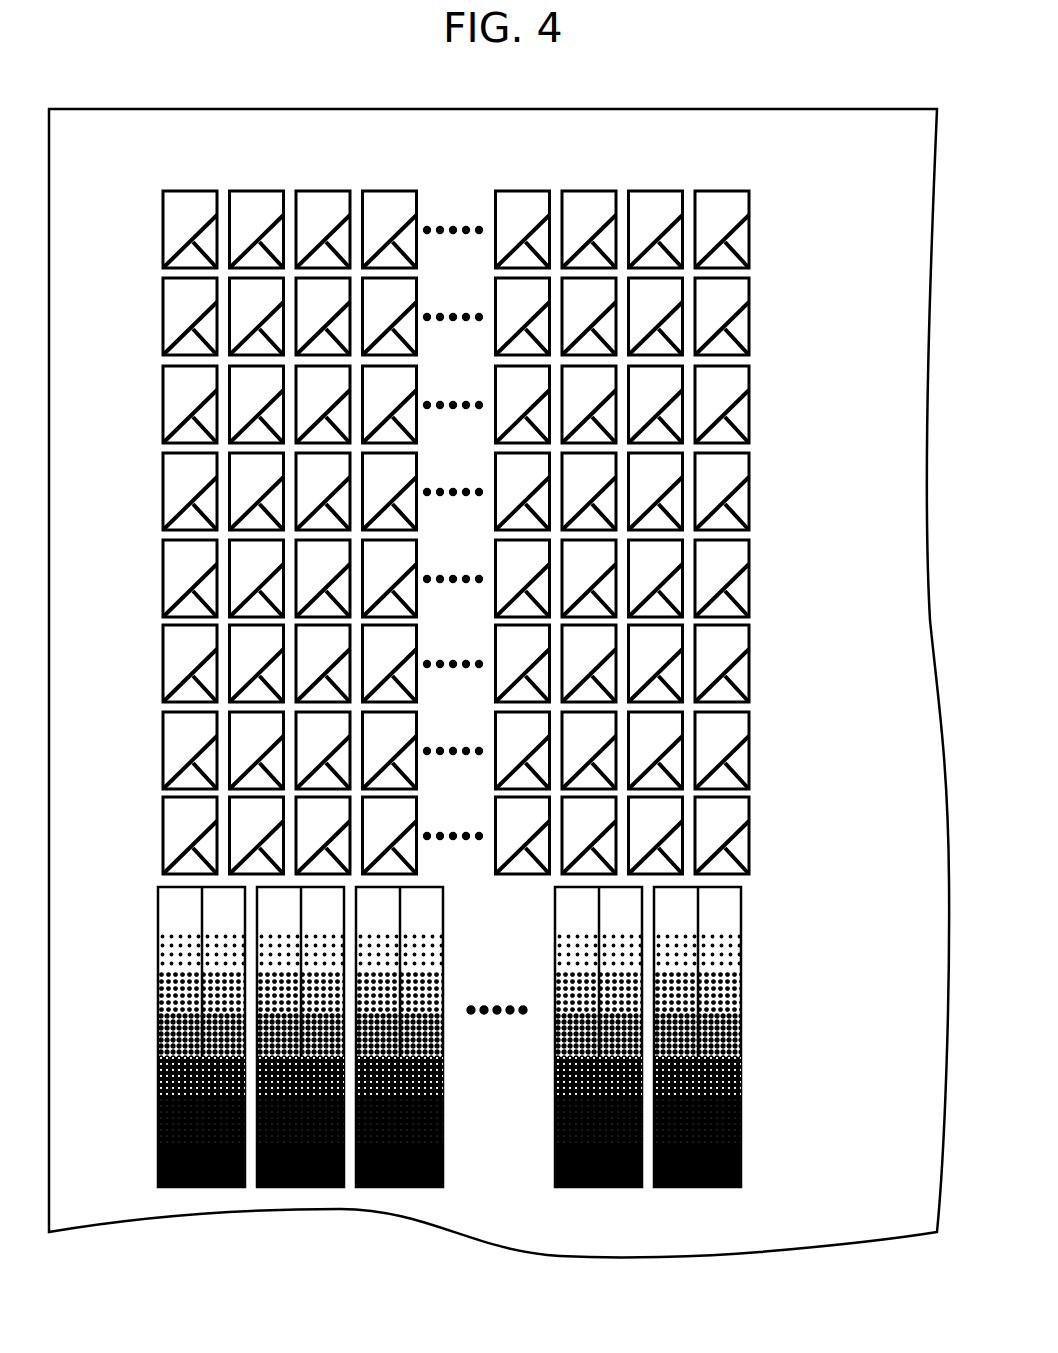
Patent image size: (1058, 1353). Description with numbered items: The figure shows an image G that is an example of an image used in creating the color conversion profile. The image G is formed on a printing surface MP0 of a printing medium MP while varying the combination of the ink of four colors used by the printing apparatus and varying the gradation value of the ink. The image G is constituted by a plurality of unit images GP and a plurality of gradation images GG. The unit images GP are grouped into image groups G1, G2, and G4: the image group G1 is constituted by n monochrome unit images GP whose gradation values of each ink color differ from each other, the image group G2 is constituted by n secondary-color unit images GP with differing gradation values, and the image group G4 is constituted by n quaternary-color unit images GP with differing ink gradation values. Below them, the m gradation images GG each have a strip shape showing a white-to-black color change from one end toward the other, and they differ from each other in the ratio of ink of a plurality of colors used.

The printing surface MP0 is at (851, 125).
The printing medium MP is at (677, 110).
The image G is at (832, 275).
The image group G1 is at (760, 190).
The image group G2 is at (760, 540).
The image group G4 is at (760, 797).
The unit image GP is at (150, 187).
The gradation image GG is at (158, 951).